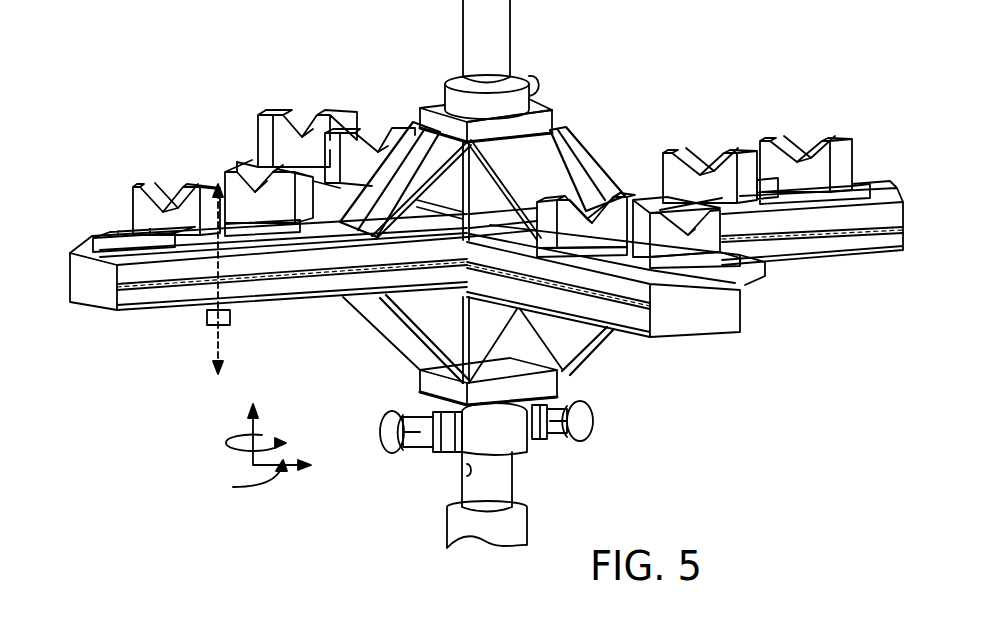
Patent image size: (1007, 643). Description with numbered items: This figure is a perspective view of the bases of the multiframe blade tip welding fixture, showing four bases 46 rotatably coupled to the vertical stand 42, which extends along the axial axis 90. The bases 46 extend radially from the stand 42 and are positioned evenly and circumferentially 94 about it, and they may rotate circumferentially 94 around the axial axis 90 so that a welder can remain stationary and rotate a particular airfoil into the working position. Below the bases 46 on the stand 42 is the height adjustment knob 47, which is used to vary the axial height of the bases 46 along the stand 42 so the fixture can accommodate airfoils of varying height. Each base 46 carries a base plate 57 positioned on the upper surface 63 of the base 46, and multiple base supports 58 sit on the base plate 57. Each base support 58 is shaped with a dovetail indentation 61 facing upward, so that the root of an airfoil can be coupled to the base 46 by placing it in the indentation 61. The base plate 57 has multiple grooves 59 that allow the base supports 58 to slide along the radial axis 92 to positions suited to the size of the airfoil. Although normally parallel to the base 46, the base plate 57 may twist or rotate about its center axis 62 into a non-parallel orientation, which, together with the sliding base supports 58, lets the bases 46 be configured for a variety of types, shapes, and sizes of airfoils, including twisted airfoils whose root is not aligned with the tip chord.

The stand 42 is at (477, 22).
The base 46 is at (127, 305).
The adjustment knob 47 is at (566, 428).
The base plate 57 is at (318, 228).
The base support 58 is at (136, 205).
The groove 59 is at (172, 243).
The dovetail indentation 61 is at (253, 181).
The center axis 62 is at (220, 333).
The upper surface 63 is at (78, 252).
The axial axis 90 is at (250, 456).
The radial axis 92 is at (244, 482).
The circumferential axis 94 is at (235, 440).